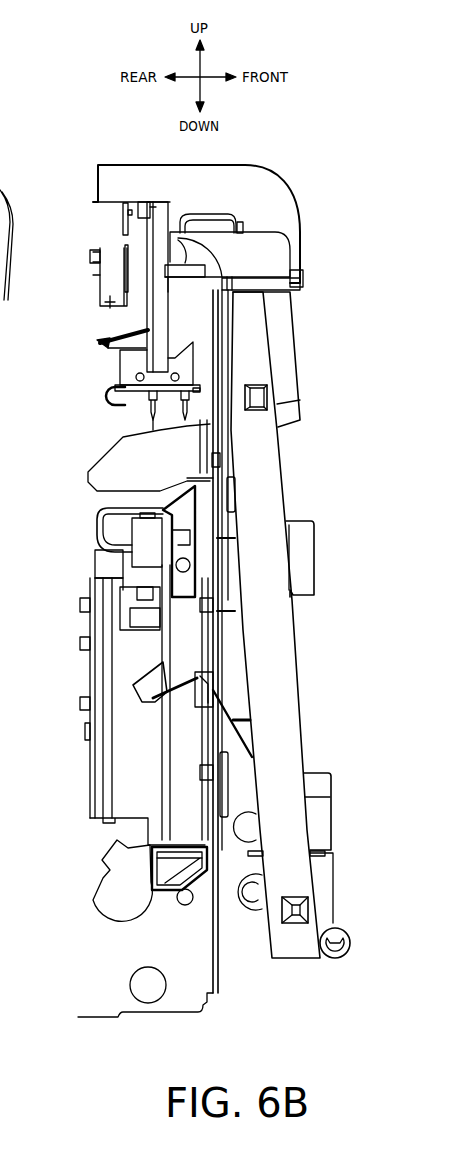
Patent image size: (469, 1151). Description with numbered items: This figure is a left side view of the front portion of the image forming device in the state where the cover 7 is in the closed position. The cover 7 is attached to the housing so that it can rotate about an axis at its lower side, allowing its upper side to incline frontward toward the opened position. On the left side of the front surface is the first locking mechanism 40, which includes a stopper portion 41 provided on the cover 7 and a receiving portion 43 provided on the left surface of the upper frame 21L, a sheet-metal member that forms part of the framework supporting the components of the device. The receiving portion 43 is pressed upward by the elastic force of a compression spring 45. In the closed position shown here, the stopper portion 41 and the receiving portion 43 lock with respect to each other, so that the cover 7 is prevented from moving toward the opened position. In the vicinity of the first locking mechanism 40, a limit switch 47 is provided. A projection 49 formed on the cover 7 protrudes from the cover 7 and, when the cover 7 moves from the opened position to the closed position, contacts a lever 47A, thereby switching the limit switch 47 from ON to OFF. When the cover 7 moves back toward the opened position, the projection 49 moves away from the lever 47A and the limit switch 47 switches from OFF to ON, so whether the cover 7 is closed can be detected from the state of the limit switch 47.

The cover 7 is at (10, 212).
The projection 49 is at (104, 340).
The lever 47A is at (106, 350).
The limit switch 47 is at (127, 367).
The first locking mechanism 40 is at (105, 508).
The stopper portion 41 is at (117, 442).
The receiving portion 43 is at (117, 541).
The compression spring 45 is at (135, 535).
The upper frame 21L is at (205, 1005).